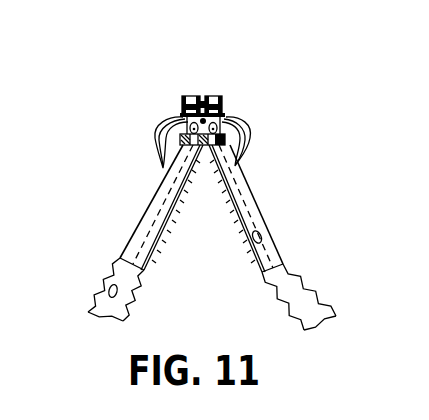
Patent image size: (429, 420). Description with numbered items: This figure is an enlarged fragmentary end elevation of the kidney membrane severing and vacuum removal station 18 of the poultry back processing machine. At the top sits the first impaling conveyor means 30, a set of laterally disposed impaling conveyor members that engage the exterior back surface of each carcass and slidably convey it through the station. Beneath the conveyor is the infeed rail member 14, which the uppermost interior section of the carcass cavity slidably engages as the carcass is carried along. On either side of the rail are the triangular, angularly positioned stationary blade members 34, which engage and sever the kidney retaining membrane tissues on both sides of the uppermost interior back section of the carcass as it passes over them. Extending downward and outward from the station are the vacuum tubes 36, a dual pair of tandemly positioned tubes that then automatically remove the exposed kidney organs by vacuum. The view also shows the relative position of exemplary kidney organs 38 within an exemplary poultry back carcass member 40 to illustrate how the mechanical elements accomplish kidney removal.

The kidney membrane severing and vacuum removal station 18 is at (250, 70).
The first impaling conveyor means 30 is at (189, 97).
The stationary blade members 34 is at (183, 124).
The kidney organs 38 is at (183, 117).
The poultry back carcass member 40 is at (222, 127).
The infeed rail member 14 is at (226, 139).
The vacuum tubes 36 is at (152, 206).